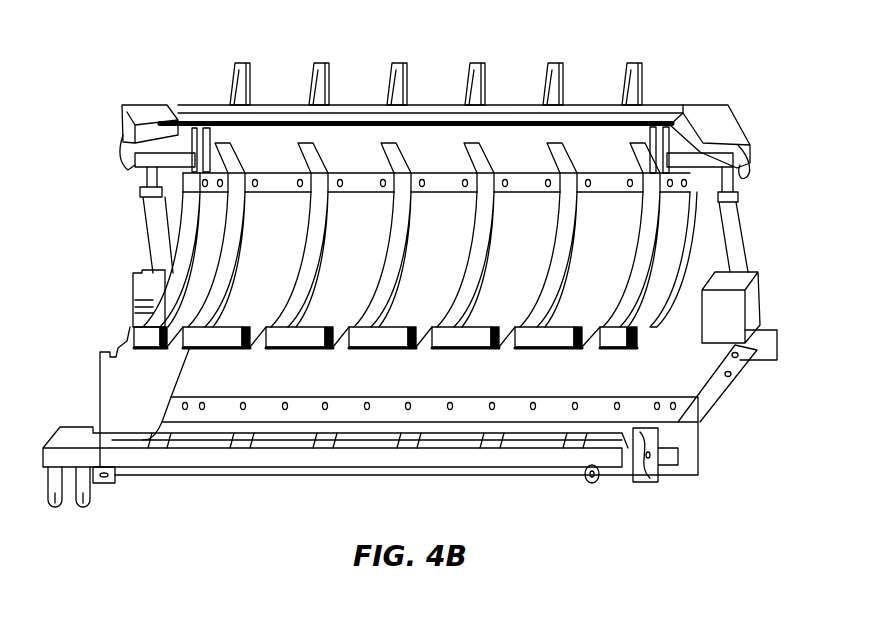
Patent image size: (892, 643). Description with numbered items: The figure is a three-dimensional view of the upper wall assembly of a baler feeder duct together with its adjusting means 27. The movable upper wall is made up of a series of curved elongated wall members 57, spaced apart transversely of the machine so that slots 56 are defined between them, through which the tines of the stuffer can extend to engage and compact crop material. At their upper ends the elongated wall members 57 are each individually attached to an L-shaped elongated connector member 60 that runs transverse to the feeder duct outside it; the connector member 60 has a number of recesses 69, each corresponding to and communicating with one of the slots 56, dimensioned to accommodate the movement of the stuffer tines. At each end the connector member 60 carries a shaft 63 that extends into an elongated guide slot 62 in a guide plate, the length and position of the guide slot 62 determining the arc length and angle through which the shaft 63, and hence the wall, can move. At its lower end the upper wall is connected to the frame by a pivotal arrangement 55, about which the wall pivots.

The elongated connector member 60 is at (508, 138).
The recesses 69 is at (636, 148).
The elongated guide slot 62 is at (728, 137).
The shaft 63 is at (747, 173).
The elongated wall members 57 is at (675, 245).
The slots 56 is at (633, 287).
The adjusting means 27 is at (748, 302).
The pivotal arrangement 55 is at (633, 335).